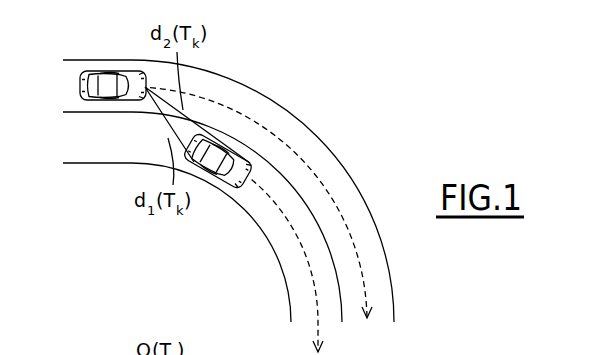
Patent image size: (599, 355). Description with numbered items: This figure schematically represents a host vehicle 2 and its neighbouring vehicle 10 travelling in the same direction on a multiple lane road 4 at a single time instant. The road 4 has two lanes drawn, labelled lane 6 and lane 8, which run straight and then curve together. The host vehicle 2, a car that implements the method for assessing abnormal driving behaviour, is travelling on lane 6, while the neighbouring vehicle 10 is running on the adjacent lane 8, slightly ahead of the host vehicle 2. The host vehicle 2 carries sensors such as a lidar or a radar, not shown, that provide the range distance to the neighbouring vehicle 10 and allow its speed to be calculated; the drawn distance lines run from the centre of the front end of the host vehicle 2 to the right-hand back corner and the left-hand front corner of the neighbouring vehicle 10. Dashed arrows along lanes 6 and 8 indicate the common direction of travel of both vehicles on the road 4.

The host vehicle 2 is at (108, 78).
The multiple lane road 4 is at (253, 89).
The lane 6 is at (328, 168).
The lane 8 is at (282, 232).
The neighbouring vehicle 10 is at (200, 170).